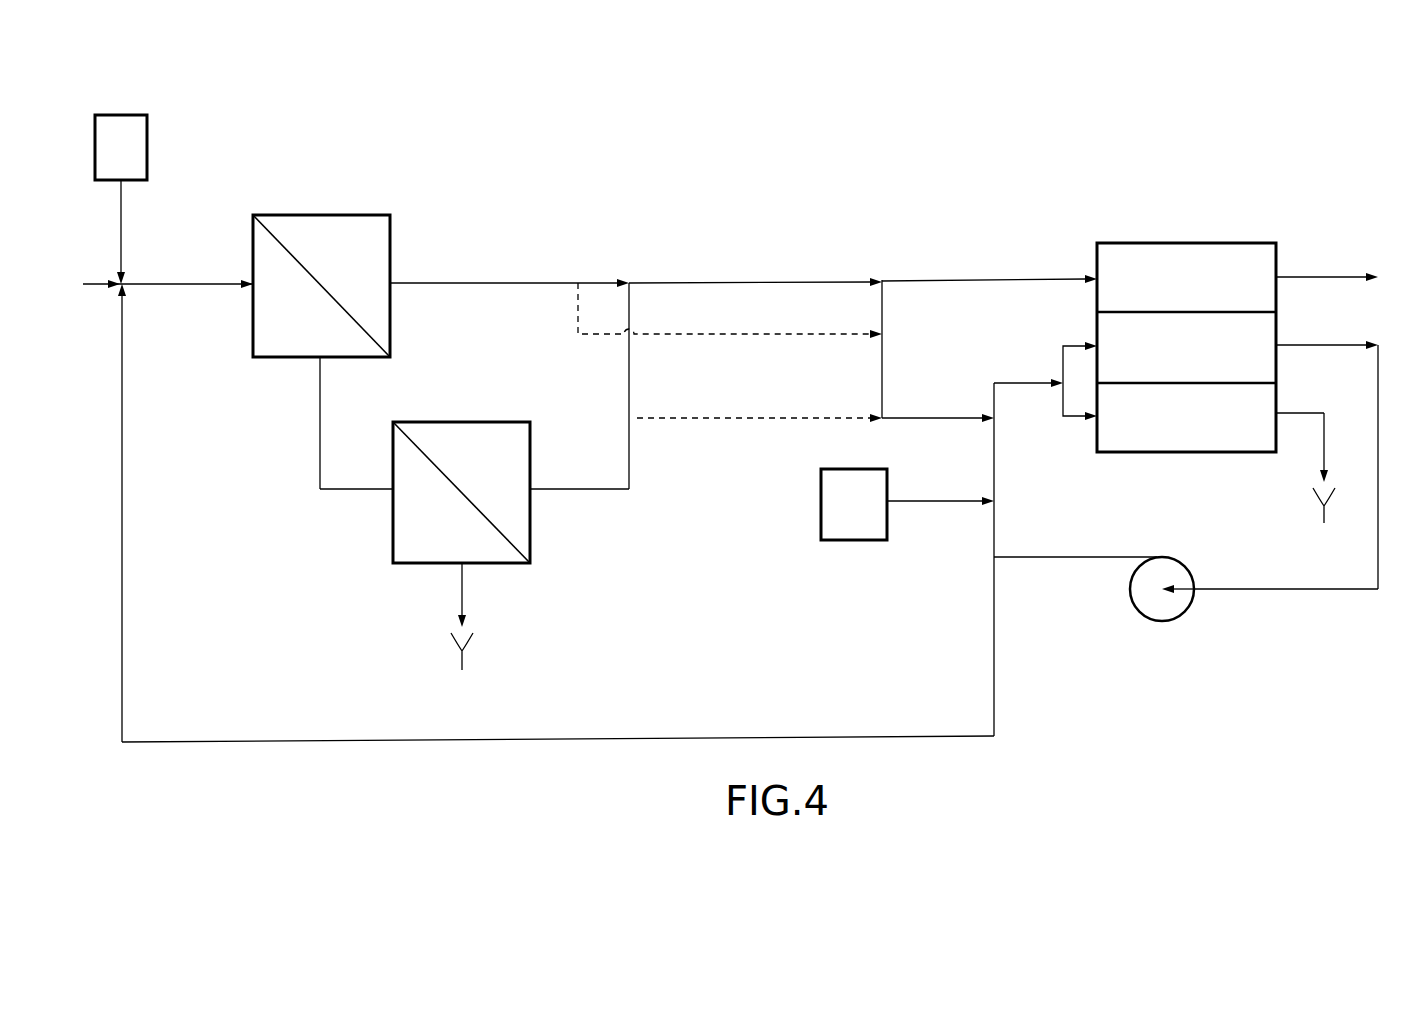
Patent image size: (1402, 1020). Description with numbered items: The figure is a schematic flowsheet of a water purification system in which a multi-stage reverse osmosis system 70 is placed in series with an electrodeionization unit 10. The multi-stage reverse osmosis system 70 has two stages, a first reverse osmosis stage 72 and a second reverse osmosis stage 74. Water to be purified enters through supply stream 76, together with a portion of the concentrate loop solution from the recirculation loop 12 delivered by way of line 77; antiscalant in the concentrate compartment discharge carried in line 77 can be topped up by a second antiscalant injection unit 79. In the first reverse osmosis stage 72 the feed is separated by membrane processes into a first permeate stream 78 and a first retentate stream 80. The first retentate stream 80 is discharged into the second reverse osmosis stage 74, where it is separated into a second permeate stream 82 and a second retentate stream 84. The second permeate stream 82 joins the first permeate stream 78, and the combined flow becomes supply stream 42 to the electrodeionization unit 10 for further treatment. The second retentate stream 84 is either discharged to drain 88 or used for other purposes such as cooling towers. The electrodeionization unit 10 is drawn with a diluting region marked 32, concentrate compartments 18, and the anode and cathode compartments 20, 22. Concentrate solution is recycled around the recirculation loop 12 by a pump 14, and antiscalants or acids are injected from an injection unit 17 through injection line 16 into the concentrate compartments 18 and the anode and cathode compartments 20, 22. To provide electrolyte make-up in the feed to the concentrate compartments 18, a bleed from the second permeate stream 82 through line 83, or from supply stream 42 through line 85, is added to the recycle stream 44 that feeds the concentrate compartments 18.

The electrodeionization unit 10 is at (1205, 218).
The recirculation loop 12 is at (1350, 592).
The pump 14 is at (1172, 619).
The injection line 16 is at (917, 502).
The injection unit 17 is at (850, 540).
The concentrate compartments 18 is at (1299, 352).
The anode compartment 20 is at (1241, 405).
The cathode compartment 22 is at (1278, 468).
The distillation region 32 is at (1237, 281).
The supply stream 42 is at (973, 279).
The recycle stream 44 is at (1063, 365).
The multi-stage reverse osmosis system 70 is at (468, 218).
The first reverse osmosis stage 72 is at (318, 215).
The second reverse osmosis stage 74 is at (478, 422).
The supply stream 76 is at (197, 284).
The line 77 is at (122, 662).
The first permeate stream 78 is at (528, 282).
The second antiscalant injection unit 79 is at (147, 140).
The first retentate stream 80 is at (320, 427).
The second permeate stream 82 is at (629, 380).
The line 83 is at (745, 421).
The second retentate stream 84 is at (462, 573).
The line 85 is at (882, 362).
The drain 88 is at (462, 656).